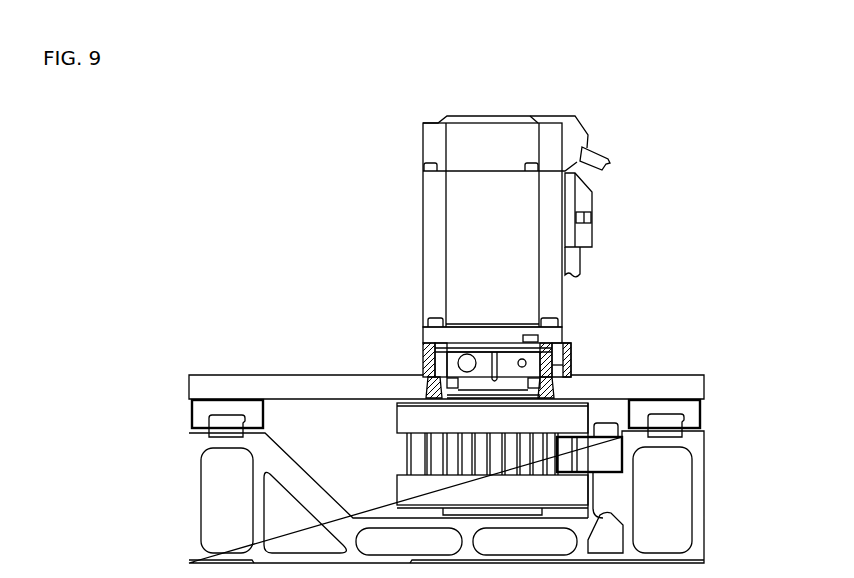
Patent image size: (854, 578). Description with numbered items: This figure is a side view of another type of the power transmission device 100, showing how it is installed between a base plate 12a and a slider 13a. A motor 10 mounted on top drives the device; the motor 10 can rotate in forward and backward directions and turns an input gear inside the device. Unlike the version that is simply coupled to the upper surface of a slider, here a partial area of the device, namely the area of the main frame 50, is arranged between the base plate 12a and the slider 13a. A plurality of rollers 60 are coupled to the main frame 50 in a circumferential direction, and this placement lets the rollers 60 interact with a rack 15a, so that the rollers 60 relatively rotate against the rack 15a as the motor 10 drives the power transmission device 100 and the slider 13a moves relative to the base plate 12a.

The power transmission device 100 is at (606, 121).
The motor 10 is at (435, 267).
The slider 13a is at (698, 392).
The base plate 12a is at (696, 510).
The main frame 50 is at (392, 428).
The rollers 60 is at (418, 459).
The rack 15a is at (563, 453).